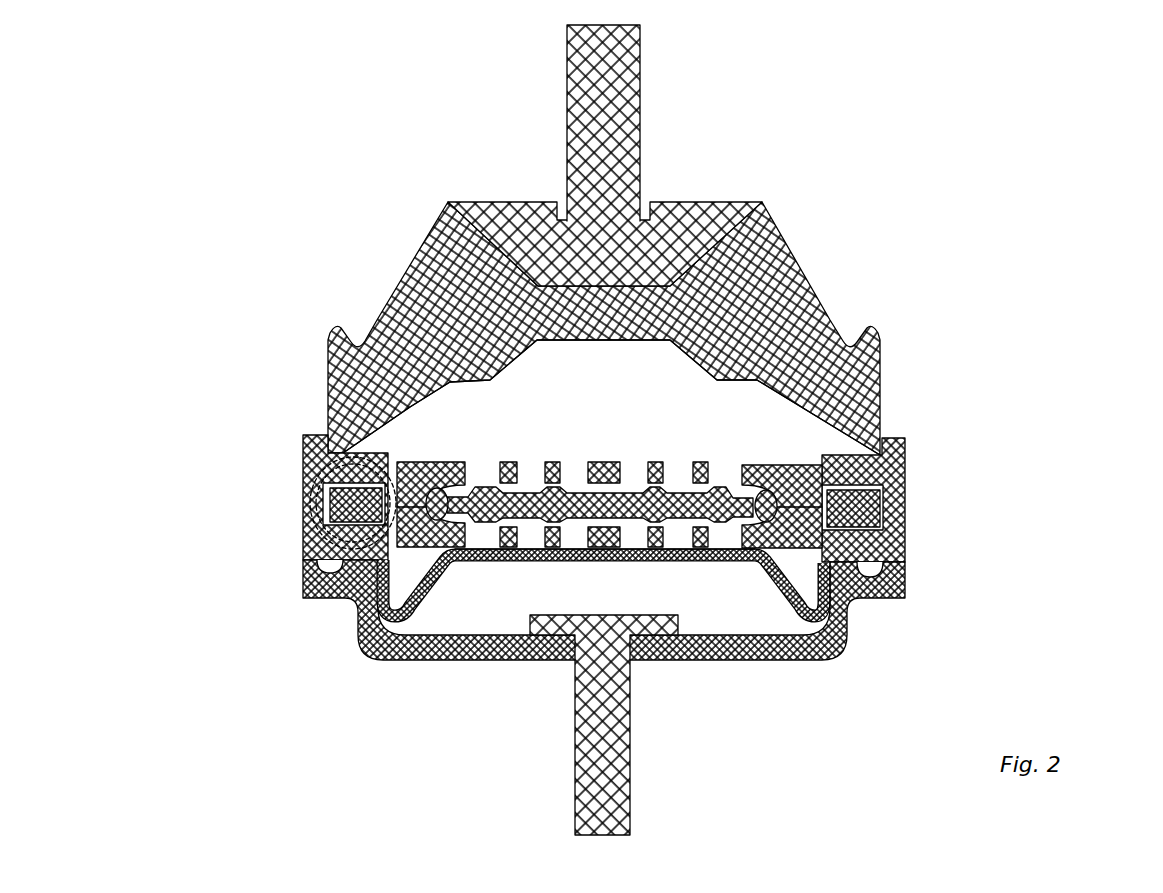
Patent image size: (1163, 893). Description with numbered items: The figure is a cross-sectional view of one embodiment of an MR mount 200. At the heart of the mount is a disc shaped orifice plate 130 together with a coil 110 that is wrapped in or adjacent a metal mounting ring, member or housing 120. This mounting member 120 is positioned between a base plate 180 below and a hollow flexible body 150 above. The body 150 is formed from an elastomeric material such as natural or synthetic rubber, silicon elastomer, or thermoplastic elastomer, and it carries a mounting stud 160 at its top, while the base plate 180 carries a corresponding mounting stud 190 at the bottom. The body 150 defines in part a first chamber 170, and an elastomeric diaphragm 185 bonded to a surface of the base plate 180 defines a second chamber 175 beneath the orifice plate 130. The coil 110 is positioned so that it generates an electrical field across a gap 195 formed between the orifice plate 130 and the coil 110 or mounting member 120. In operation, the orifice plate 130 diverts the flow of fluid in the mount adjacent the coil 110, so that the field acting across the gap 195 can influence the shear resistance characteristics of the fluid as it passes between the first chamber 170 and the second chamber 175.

The coil 110 is at (887, 498).
The mounting member 120 is at (908, 544).
The orifice plate 130 is at (734, 545).
The hollow flexible body 150 is at (386, 298).
The mounting stud 160 is at (556, 92).
The first chamber 170 is at (623, 401).
The second chamber 175 is at (616, 600).
The base plate 180 is at (357, 613).
The elastomeric diaphragm 185 is at (633, 578).
The mounting stud 190 is at (650, 791).
The gap 195 is at (380, 501).
The MR mount 200 is at (891, 228).